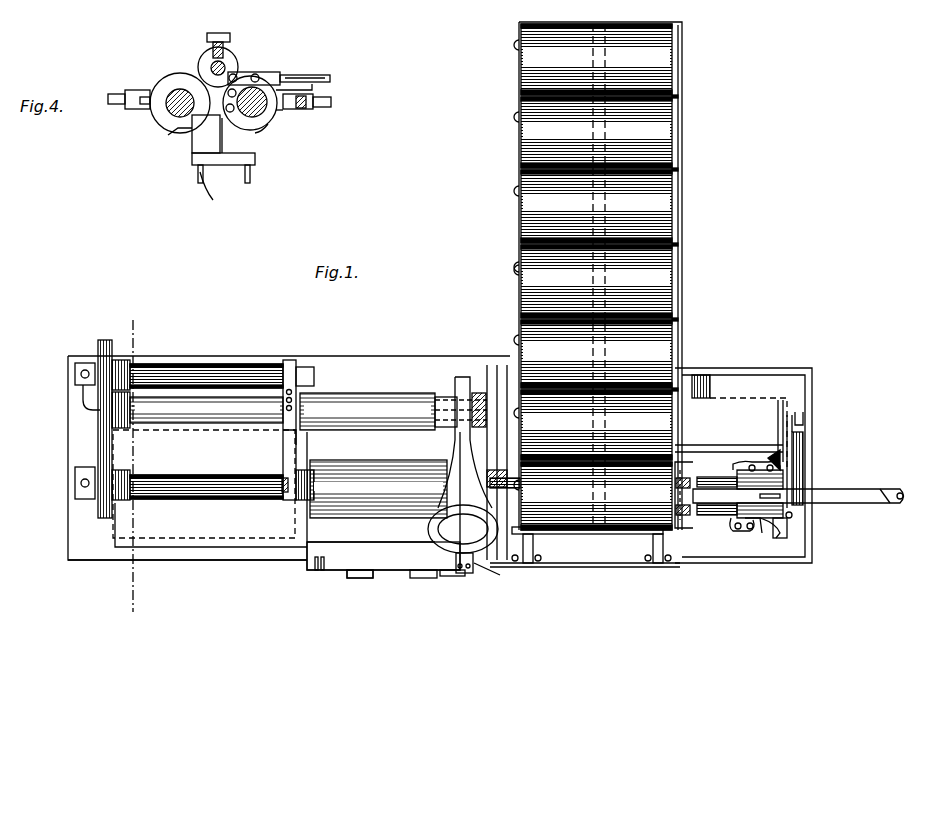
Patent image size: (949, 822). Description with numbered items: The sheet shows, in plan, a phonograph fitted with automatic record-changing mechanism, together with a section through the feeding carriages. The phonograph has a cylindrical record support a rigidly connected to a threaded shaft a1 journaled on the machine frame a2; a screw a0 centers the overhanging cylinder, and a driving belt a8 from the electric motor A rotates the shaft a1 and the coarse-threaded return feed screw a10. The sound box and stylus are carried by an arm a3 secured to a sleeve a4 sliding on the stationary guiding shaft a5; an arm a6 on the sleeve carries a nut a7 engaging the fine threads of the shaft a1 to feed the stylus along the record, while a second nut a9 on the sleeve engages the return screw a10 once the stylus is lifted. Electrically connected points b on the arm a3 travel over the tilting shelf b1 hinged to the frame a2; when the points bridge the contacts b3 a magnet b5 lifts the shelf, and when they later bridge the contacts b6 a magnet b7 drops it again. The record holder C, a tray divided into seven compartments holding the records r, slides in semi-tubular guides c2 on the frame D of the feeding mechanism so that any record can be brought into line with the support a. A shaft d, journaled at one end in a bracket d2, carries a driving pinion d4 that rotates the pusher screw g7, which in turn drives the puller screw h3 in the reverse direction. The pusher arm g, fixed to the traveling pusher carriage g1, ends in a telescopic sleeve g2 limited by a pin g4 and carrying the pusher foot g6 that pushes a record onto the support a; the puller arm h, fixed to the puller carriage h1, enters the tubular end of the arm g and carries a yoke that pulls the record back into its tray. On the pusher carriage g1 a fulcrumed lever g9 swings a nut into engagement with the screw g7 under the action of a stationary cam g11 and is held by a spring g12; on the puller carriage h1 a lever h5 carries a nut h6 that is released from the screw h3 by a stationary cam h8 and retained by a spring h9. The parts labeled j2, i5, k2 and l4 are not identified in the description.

In FIG. 4, the pusher feed screw g7 is at (178, 100).
In FIG. 4, the puller arm h is at (222, 64).
In FIG. 1, the puller arm h is at (681, 478).
In FIG. 4, the puller feed screw h3 is at (262, 98).
In FIG. 4, the rod j2 is at (310, 80).
In FIG. 4, the nut h6 is at (312, 88).
In FIG. 4, the lever h5 is at (331, 103).
In FIG. 1, the lever h5 is at (750, 523).
In FIG. 4, the spring h9 is at (272, 112).
In FIG. 1, the spring h9 is at (735, 533).
In FIG. 4, the puller carriage h1 is at (265, 128).
In FIG. 1, the puller carriage h1 is at (762, 523).
In FIG. 4, the fulcrumed arm g9 is at (118, 102).
In FIG. 1, the fulcrumed arm g9 is at (740, 462).
In FIG. 4, the stationary cam g11 is at (192, 140).
In FIG. 1, the stationary cam g11 is at (742, 422).
In FIG. 4, the support i5 is at (245, 175).
In FIG. 1, the electric motor A is at (222, 540).
In FIG. 1, the cylindrical record support a is at (293, 500).
In FIG. 1, the screw a0 is at (75, 483).
In FIG. 1, the threaded shaft a1 is at (203, 500).
In FIG. 1, the frame a2 is at (200, 560).
In FIG. 1, the arm a3 is at (468, 456).
In FIG. 1, the sleeve a4 is at (358, 400).
In FIG. 1, the stationary guiding shaft a5 is at (158, 425).
In FIG. 1, the arm a6 is at (284, 444).
In FIG. 1, the nut a7 is at (283, 490).
In FIG. 1, the driving belt a8 is at (100, 520).
In FIG. 1, the nut a9 is at (285, 364).
In FIG. 1, the return feed screw a10 is at (170, 367).
In FIG. 1, the electrically connected points b is at (493, 576).
In FIG. 1, the tilting shelf b1 is at (395, 570).
In FIG. 1, the contacts b3 is at (466, 572).
In FIG. 1, the magnet b5 is at (458, 578).
In FIG. 1, the contacts b6 is at (316, 572).
In FIG. 1, the magnet b7 is at (365, 580).
In FIG. 1, the gear k2 is at (520, 486).
In FIG. 1, the semi-tubular guides c2 is at (650, 546).
In FIG. 1, the record magazine or holder C is at (682, 133).
In FIG. 1, the records r is at (593, 277).
In FIG. 1, the pin l4 is at (517, 266).
In FIG. 1, the frame of the feeding mechanism D is at (812, 370).
In FIG. 1, the shaft d is at (720, 445).
In FIG. 1, the bracket d2 is at (797, 428).
In FIG. 1, the driving pinion d4 is at (805, 440).
In FIG. 1, the pusher arm g is at (887, 503).
In FIG. 1, the pusher carriage g1 is at (800, 488).
In FIG. 1, the telescopic sleeve g2 is at (790, 525).
In FIG. 1, the pin g4 is at (795, 503).
In FIG. 1, the pusher foot g6 is at (700, 540).
In FIG. 1, the spring g12 is at (781, 465).
In FIG. 1, the stationary cam h8 is at (792, 518).